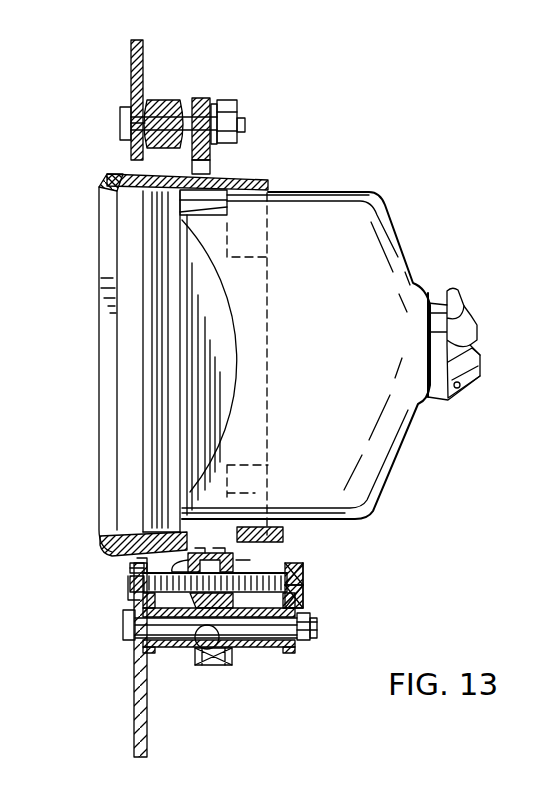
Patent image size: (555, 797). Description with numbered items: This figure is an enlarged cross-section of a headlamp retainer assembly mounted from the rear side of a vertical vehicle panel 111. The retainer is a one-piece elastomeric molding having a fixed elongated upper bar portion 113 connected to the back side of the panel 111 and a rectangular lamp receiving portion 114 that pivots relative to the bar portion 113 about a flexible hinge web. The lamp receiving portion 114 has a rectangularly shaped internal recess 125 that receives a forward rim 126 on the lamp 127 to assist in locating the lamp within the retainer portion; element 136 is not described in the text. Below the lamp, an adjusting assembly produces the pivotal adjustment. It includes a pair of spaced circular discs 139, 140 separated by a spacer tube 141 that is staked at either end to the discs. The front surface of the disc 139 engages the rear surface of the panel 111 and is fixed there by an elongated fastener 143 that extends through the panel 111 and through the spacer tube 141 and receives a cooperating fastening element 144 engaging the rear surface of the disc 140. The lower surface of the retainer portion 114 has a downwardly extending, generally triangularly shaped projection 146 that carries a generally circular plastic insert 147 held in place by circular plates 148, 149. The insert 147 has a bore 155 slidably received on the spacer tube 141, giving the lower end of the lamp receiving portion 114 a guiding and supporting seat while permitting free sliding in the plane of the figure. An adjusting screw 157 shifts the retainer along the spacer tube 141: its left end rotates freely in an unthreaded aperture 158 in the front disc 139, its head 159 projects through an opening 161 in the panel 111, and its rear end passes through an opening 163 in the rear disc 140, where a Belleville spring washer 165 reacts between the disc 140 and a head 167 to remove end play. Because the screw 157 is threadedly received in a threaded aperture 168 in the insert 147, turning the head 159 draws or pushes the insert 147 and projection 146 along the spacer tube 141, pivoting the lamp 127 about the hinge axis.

The vertical vehicle panel 111 is at (133, 683).
The upper bar portion 113 is at (203, 98).
The lamp receiving portion 114 is at (100, 182).
The internal recess 125 is at (167, 540).
The forward rim 126 is at (140, 378).
The lamp 127 is at (310, 217).
The spacer block 136 is at (211, 164).
The circular disc 139 is at (137, 558).
The circular disc 140 is at (285, 574).
The spacer tube 141 is at (258, 648).
The elongated fastener 143 is at (120, 628).
The fastening element 144 is at (310, 643).
The triangularly shaped projection 146 is at (217, 666).
The plastic insert 147 is at (214, 553).
The circular plate 148 is at (205, 535).
The circular plate 149 is at (240, 565).
The bore 155 is at (203, 646).
The adjusting screw 157 is at (143, 520).
The aperture 158 is at (128, 593).
The head 159 is at (130, 572).
The opening 161 is at (128, 597).
The opening 163 is at (303, 590).
The Belleville spring washer 165 is at (303, 607).
The head 167 is at (303, 576).
The threaded aperture 168 is at (236, 560).